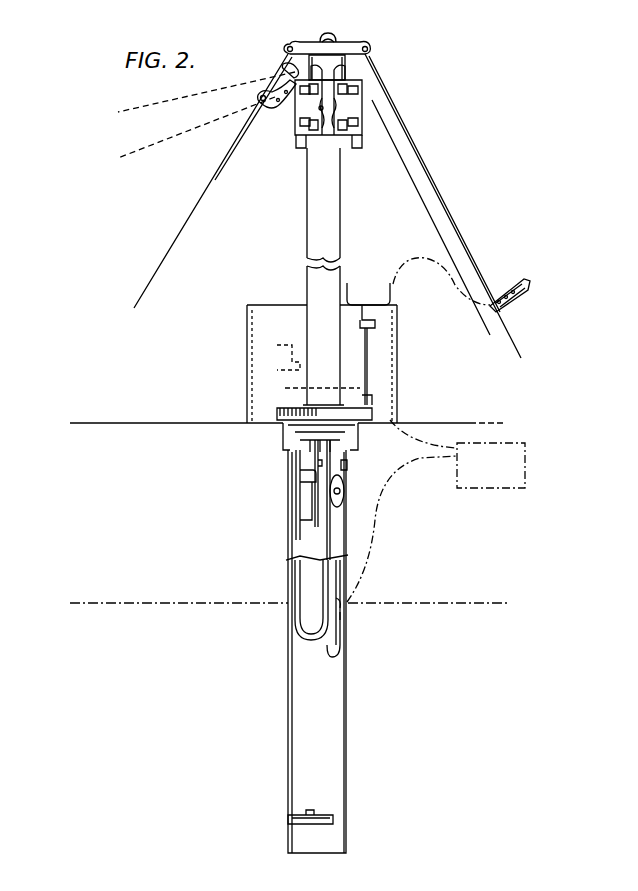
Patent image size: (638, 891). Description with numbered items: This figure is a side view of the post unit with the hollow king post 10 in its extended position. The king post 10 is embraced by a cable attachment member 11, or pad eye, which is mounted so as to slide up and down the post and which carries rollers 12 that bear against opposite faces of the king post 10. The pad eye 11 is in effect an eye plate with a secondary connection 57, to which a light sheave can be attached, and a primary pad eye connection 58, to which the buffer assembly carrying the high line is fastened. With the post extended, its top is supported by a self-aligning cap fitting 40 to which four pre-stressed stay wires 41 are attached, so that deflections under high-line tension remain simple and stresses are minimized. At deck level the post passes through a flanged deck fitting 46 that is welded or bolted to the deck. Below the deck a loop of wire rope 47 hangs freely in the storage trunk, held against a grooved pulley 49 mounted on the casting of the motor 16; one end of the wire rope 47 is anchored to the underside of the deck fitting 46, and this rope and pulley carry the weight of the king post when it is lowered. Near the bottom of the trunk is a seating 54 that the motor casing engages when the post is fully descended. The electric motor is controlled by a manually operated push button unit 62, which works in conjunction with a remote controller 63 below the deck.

The king post 10 is at (330, 208).
The cable attachment member 11 is at (352, 100).
The rollers 12 is at (329, 109).
The motor 16 is at (308, 498).
The self-aligning cap fitting 40 is at (345, 42).
The pre-stressed stay wires 41 is at (208, 180).
The flanged deck fitting 46 is at (372, 418).
The wire rope 47 is at (342, 655).
The grooved pulley 49 is at (344, 494).
The seating 54 is at (290, 817).
The secondary connection 57 is at (290, 72).
The primary pad eye connection 58 is at (270, 98).
The push button unit 62 is at (515, 298).
The remote controller 63 is at (500, 480).